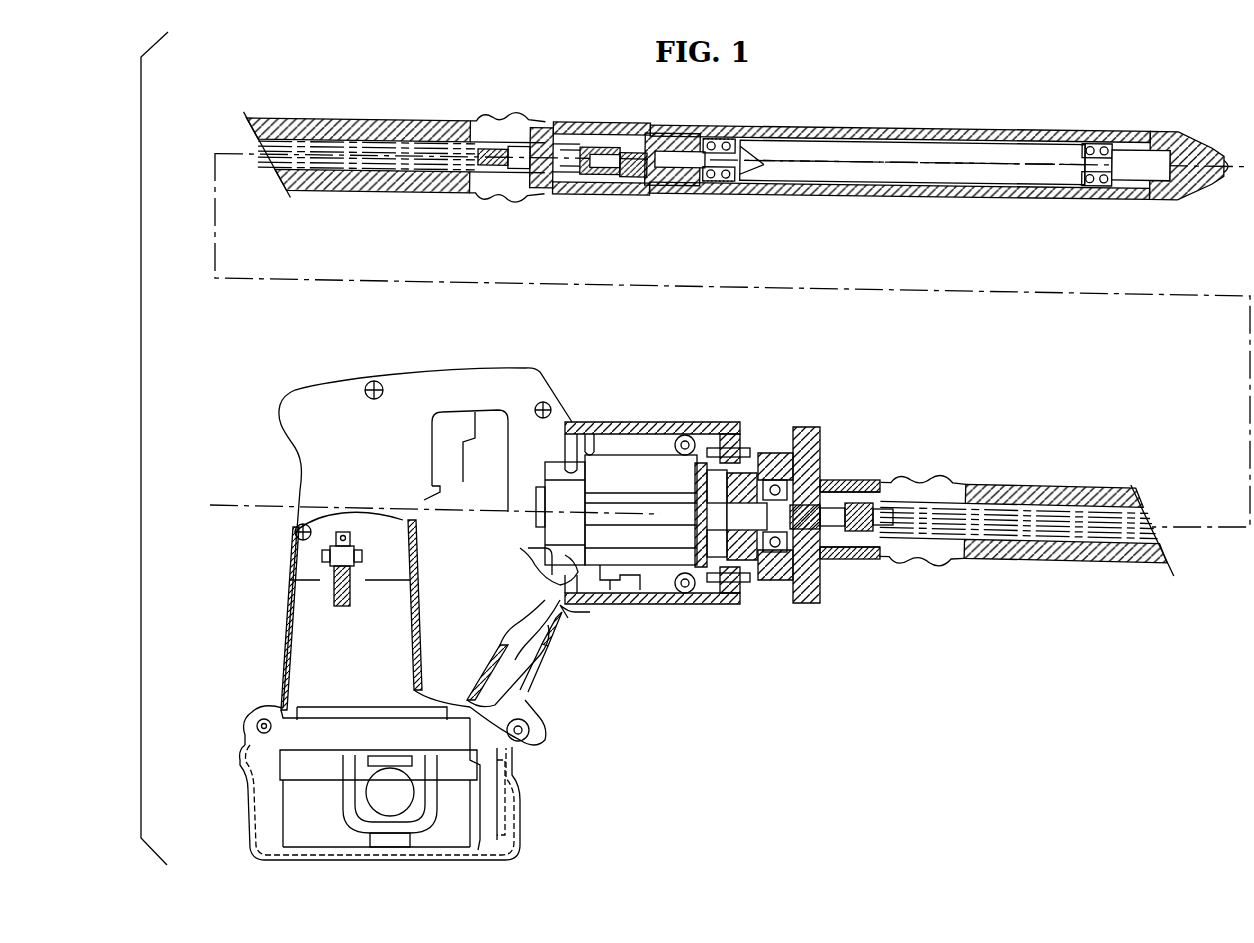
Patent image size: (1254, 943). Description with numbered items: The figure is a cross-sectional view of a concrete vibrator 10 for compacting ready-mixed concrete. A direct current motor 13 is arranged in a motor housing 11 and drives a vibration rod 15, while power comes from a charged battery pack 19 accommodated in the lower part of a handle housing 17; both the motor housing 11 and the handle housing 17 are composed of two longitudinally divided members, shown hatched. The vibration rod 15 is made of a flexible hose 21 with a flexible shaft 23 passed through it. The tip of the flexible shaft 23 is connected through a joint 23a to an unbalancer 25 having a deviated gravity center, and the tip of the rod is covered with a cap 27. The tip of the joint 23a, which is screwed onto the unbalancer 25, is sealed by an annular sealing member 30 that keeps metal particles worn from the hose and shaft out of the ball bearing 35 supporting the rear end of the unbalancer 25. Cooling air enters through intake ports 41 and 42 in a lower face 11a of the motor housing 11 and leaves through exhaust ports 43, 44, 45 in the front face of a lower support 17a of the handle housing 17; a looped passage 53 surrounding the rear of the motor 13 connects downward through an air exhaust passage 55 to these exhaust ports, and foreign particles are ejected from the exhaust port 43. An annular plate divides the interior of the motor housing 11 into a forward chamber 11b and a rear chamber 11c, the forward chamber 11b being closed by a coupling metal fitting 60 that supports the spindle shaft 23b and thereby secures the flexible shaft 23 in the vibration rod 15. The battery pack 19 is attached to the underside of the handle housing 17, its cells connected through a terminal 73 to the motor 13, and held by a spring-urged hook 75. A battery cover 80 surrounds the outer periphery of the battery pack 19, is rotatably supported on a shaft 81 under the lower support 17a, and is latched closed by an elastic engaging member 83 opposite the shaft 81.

The concrete vibrator 10 is at (958, 695).
The motor housing 11 is at (608, 422).
The lower face of motor housing 11a is at (712, 602).
The forward chamber 11b is at (640, 455).
The rear chamber 11c is at (572, 420).
The direct current motor 13 is at (650, 480).
The vibration rod 15 is at (859, 210).
The handle housing 17 is at (277, 638).
The lower support of handle housing 17a is at (530, 690).
The battery pack 19 is at (297, 807).
The flexible hose 21 is at (336, 125).
The flexible shaft 23 is at (380, 147).
The joint 23a is at (660, 145).
The spindle shaft 23b is at (830, 472).
The unbalancer 25 is at (810, 148).
The cap 27 is at (1182, 143).
The sealing member 30 is at (703, 142).
The ball bearing 35 is at (712, 140).
The cooling air intake port 41 is at (672, 603).
The cooling air intake port 42 is at (640, 605).
The cooling air exhaust port 43 is at (573, 610).
The cooling air exhaust port 44 is at (548, 640).
The cooling air exhaust port 45 is at (550, 645).
The looped passage 53 is at (553, 570).
The air exhaust passage 55 is at (528, 636).
The coupling metal fitting 60 is at (761, 606).
The terminal 73 is at (340, 598).
The hook 75 is at (413, 805).
The battery cover 80 is at (507, 820).
The shaft 81 is at (528, 740).
The engaging member 83 is at (240, 734).